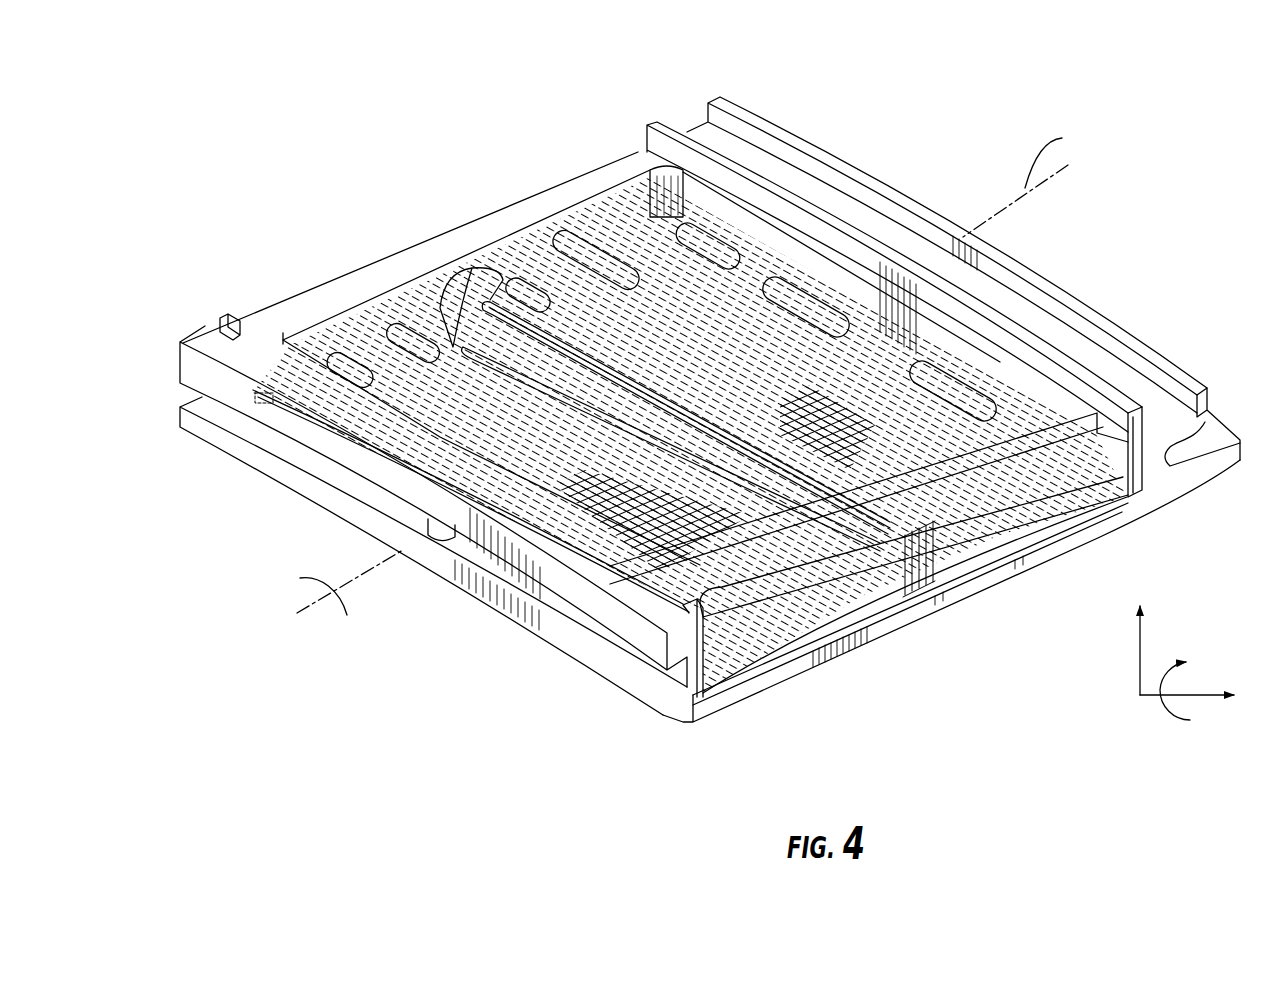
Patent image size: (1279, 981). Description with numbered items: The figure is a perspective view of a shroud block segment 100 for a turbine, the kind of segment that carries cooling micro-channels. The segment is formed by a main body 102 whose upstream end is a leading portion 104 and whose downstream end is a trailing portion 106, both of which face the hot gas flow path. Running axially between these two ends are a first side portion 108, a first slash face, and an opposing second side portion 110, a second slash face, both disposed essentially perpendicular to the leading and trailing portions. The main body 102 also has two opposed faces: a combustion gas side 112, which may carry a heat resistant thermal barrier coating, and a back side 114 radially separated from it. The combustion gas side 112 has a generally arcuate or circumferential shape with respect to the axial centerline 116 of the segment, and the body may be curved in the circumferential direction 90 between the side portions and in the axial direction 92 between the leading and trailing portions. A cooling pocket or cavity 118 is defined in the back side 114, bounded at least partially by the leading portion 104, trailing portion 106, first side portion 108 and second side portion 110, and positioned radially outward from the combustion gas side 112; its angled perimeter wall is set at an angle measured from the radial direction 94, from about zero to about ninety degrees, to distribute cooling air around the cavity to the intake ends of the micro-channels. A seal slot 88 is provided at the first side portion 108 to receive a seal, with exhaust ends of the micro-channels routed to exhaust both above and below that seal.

The seal slot 88 is at (1100, 512).
The circumferential direction 90 is at (1163, 715).
The axial direction 92 is at (1203, 690).
The radial direction 94 is at (1138, 648).
The shroud block segment 100 is at (948, 52).
The main body 102 is at (1025, 318).
The leading portion 104 is at (193, 472).
The trailing portion 106 is at (1170, 300).
The first side portion 108 is at (877, 655).
The second side portion 110 is at (483, 188).
The combustion gas side 112 is at (736, 712).
The back side 114 is at (570, 185).
The axial centerline 116 is at (1047, 184).
The cavity 118 is at (737, 320).